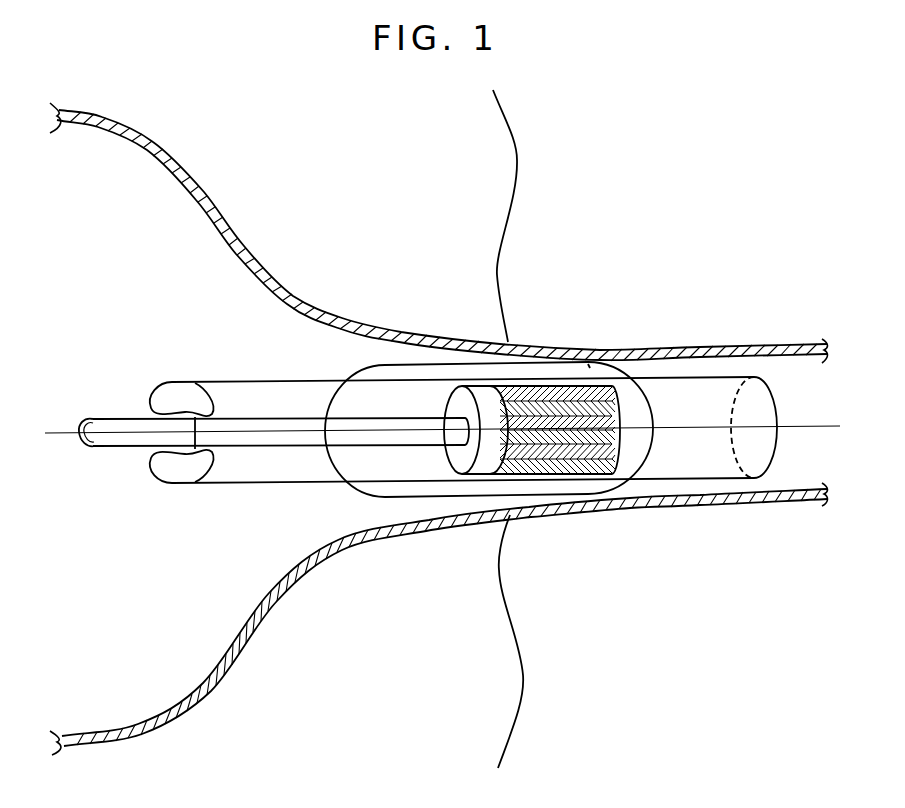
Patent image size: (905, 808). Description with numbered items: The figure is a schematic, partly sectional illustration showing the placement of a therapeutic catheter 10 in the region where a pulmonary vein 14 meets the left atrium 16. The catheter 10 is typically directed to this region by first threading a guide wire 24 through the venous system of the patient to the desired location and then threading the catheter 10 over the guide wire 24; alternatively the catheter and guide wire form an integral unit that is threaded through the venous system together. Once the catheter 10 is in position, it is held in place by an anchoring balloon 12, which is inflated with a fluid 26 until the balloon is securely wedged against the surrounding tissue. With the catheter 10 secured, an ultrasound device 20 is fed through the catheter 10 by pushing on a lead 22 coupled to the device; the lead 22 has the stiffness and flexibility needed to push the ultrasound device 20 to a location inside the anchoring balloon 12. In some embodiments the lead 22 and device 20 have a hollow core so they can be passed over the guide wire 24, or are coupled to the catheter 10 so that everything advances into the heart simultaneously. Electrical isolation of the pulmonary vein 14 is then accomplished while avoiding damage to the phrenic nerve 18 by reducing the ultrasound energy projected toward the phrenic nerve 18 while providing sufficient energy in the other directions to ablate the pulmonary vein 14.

The therapeutic catheter 10 is at (258, 380).
The anchoring balloon 12 is at (362, 492).
The pulmonary vein 14 is at (832, 402).
The left atrium 16 is at (127, 280).
The phrenic nerve 18 is at (515, 158).
The ultrasound device 20 is at (557, 389).
The lead 22 is at (126, 418).
The guide wire 24 is at (80, 438).
The fluid 26 is at (592, 370).